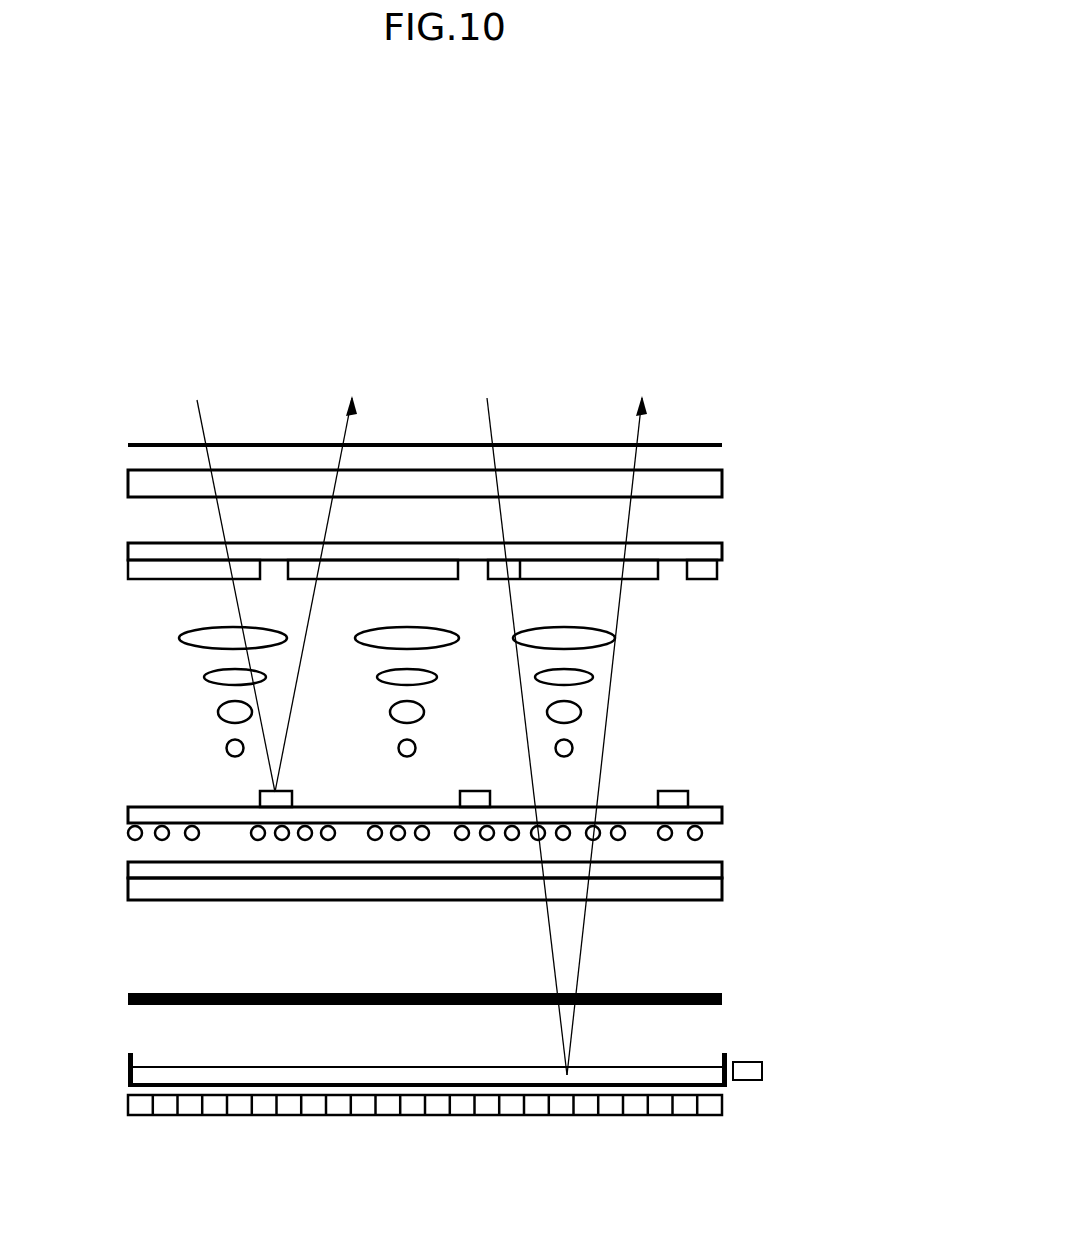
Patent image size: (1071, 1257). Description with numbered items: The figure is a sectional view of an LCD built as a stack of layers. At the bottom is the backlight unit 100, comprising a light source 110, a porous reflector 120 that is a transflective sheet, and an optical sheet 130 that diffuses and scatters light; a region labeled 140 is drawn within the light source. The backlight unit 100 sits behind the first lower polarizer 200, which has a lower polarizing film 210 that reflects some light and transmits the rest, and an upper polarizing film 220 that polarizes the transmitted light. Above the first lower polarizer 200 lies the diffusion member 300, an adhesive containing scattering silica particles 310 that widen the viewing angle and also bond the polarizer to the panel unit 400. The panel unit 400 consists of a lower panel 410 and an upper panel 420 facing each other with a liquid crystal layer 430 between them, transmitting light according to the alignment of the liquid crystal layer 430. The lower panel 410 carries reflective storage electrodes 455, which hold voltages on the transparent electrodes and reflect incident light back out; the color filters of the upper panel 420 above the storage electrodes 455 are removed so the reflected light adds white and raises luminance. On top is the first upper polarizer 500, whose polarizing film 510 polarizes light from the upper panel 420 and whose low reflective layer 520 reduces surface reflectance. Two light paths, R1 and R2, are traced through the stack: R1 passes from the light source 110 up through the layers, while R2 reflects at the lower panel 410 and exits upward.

The backlight unit 100 is at (530, 1074).
The light source 110 is at (755, 1068).
The porous reflector 120 is at (491, 1114).
The optical sheet 130 is at (722, 997).
The focal plane of ray R1 140 is at (322, 1073).
The first lower polarizer 200 is at (531, 880).
The lower polarizing film 210 is at (712, 890).
The upper polarizing film 220 is at (724, 868).
The diffusion member 300 is at (450, 858).
The silica particles 310 is at (132, 838).
The panel unit 400 is at (530, 676).
The lower panel 410 is at (722, 810).
The upper panel 420 is at (705, 555).
The liquid crystal layer 430 is at (673, 665).
The storage electrodes 455 is at (755, 764).
The first upper polarizer 500 is at (530, 457).
The polarizing film 510 is at (722, 480).
The low reflective layer 520 is at (722, 443).
The light ray R1 is at (575, 719).
The light ray R2 is at (285, 577).